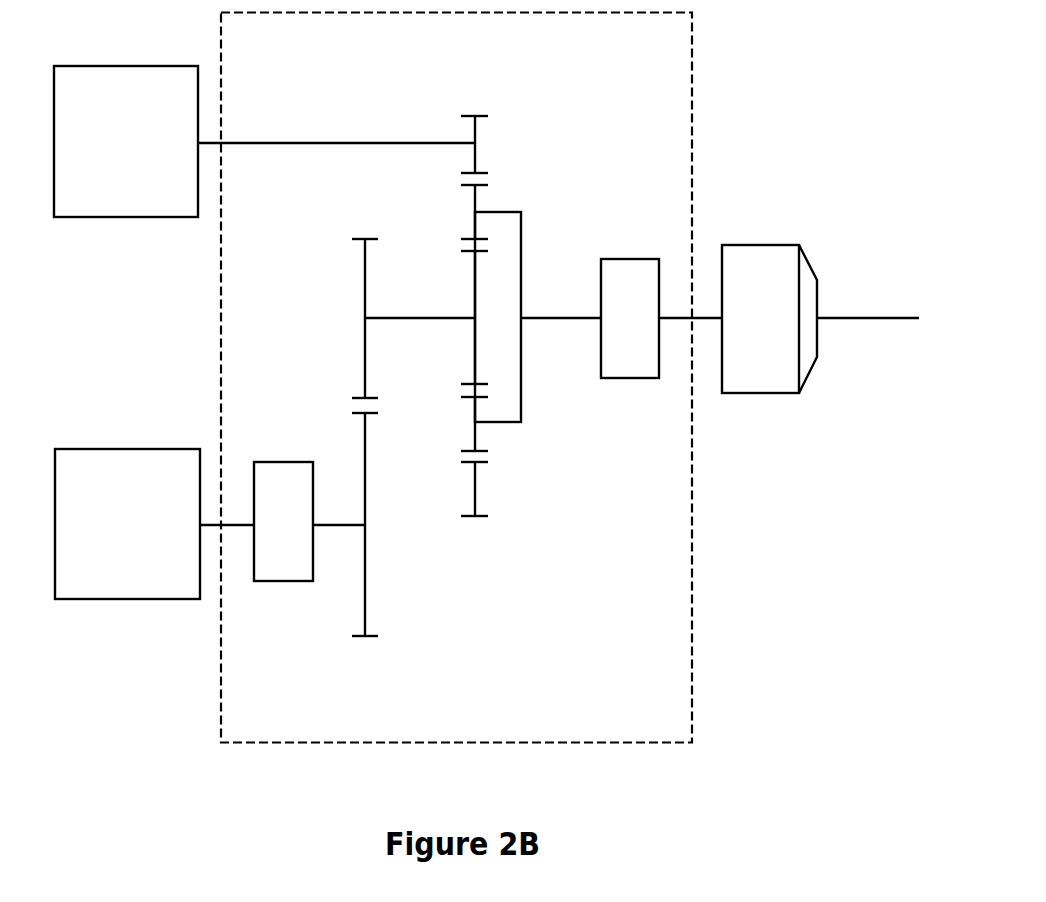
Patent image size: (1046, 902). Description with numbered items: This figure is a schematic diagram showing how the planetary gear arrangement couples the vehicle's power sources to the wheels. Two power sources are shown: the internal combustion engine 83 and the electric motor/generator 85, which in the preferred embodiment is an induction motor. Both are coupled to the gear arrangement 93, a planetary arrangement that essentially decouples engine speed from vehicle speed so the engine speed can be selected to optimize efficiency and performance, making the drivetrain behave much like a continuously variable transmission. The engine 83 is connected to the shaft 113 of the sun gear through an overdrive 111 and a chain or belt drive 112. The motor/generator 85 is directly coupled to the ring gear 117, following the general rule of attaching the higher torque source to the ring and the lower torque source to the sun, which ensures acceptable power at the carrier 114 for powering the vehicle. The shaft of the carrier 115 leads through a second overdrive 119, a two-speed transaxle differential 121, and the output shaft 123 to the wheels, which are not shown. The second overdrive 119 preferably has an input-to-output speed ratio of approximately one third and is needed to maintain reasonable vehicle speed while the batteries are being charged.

The internal combustion engine 83 is at (112, 546).
The electric motor/generator 85 is at (111, 154).
The gear arrangement 93 is at (496, 378).
The overdrive 111 is at (266, 536).
The chain or belt drive 112 is at (320, 400).
The shaft of the sun gear 113 is at (413, 437).
The carrier 114 is at (545, 312).
The shaft of the carrier 115 is at (561, 299).
The ring gear 117 is at (516, 315).
The second overdrive 119 is at (612, 331).
The two-speed transaxle differential 121 is at (742, 334).
The output shaft 123 is at (868, 299).